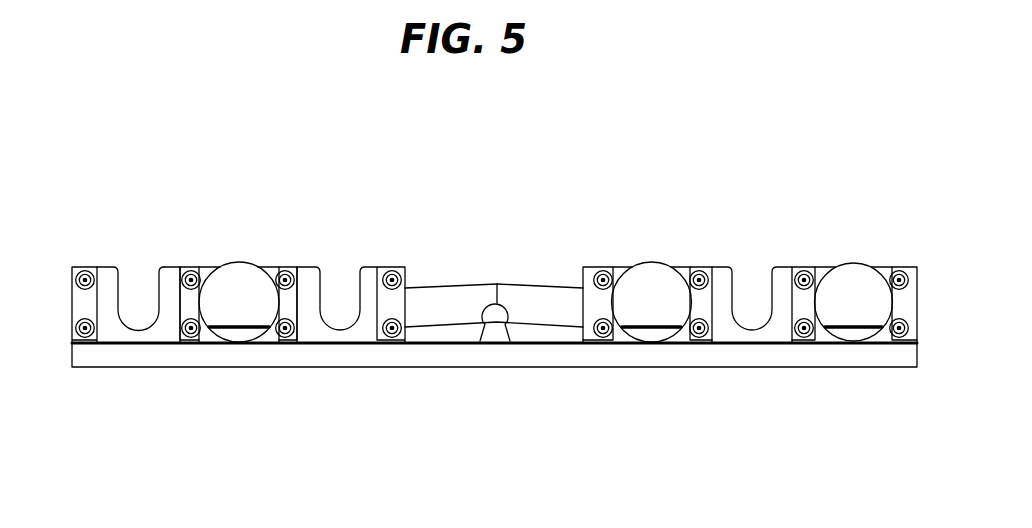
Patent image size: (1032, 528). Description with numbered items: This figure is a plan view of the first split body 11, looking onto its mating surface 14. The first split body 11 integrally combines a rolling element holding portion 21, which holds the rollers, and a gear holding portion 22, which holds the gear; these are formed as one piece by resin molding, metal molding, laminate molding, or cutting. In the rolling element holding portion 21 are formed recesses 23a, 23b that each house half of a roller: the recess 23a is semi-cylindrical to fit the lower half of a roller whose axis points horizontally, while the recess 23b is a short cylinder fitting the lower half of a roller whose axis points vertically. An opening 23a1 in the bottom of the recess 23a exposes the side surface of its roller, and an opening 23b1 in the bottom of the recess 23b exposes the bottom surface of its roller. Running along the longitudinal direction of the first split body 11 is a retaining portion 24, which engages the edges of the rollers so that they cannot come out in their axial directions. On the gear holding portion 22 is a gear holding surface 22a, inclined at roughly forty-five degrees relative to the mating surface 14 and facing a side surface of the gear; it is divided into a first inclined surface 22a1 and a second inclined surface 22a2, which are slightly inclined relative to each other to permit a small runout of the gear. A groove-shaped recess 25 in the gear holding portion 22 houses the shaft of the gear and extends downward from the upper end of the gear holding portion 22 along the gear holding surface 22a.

The first split body 11 is at (585, 182).
The mating surface 14 is at (82, 307).
The rolling element holding portion 21 is at (302, 264).
The gear holding portion 22 is at (423, 284).
The gear holding surface 22a is at (576, 212).
The first inclined surface 22a1 is at (453, 302).
The second inclined surface 22a2 is at (548, 302).
The recess 23a is at (170, 287).
The opening 23a1 is at (142, 327).
The recess 23b is at (276, 297).
The opening 23b1 is at (235, 325).
The retaining portion 24 is at (575, 358).
The recess 25 is at (490, 333).